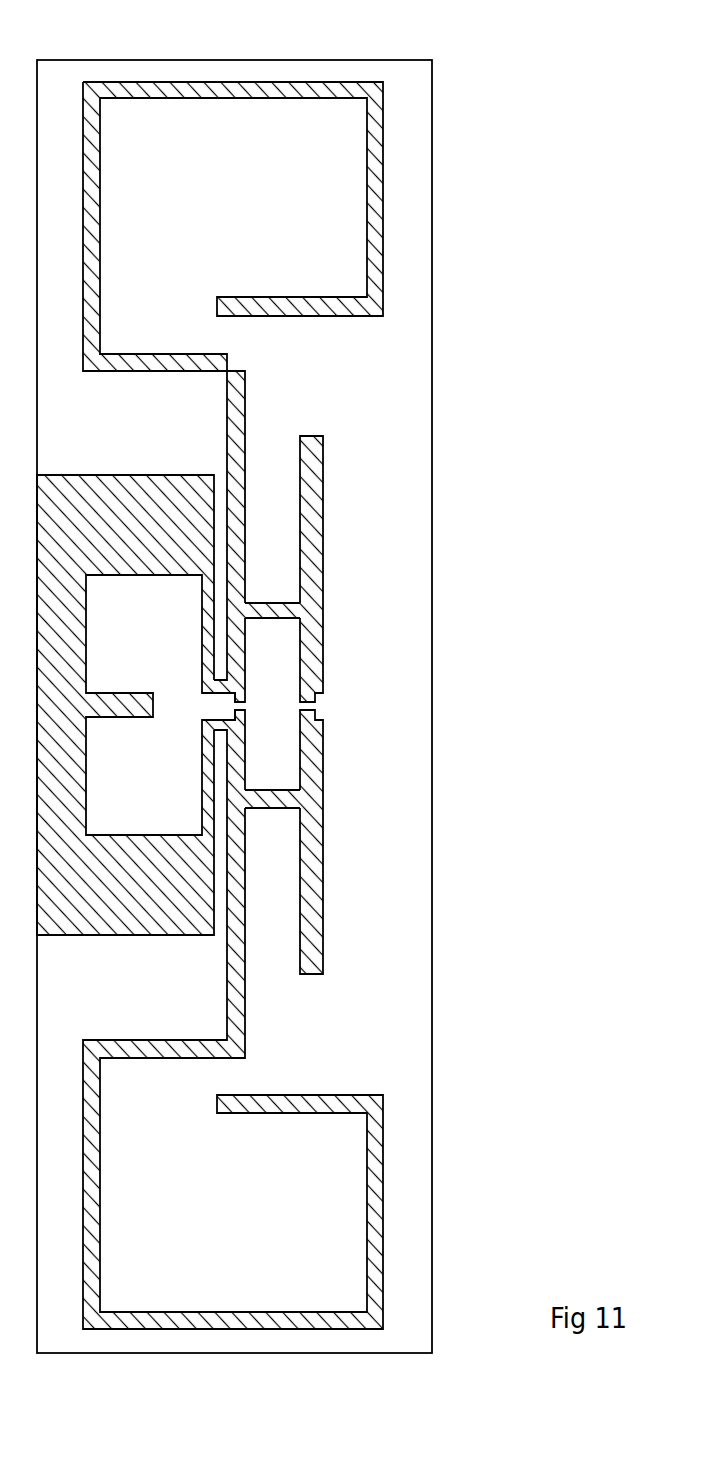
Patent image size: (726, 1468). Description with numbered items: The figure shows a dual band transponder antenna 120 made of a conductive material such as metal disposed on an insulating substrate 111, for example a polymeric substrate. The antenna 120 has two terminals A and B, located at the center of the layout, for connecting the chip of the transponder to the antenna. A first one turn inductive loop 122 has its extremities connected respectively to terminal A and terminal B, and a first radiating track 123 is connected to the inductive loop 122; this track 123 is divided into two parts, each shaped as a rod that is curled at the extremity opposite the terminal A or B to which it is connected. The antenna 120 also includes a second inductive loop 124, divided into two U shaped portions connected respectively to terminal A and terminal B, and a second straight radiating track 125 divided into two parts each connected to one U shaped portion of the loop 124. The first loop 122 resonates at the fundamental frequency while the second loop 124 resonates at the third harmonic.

The insulating substrate 111 is at (418, 261).
The dual band transponder antenna 120 is at (296, 705).
The first one turn inductive loop 122 is at (117, 483).
The first radiating track 123 is at (237, 383).
The second inductive loop 124 is at (265, 603).
The second straight radiating track 125 is at (310, 542).
The terminal A is at (244, 709).
The terminal B is at (244, 700).